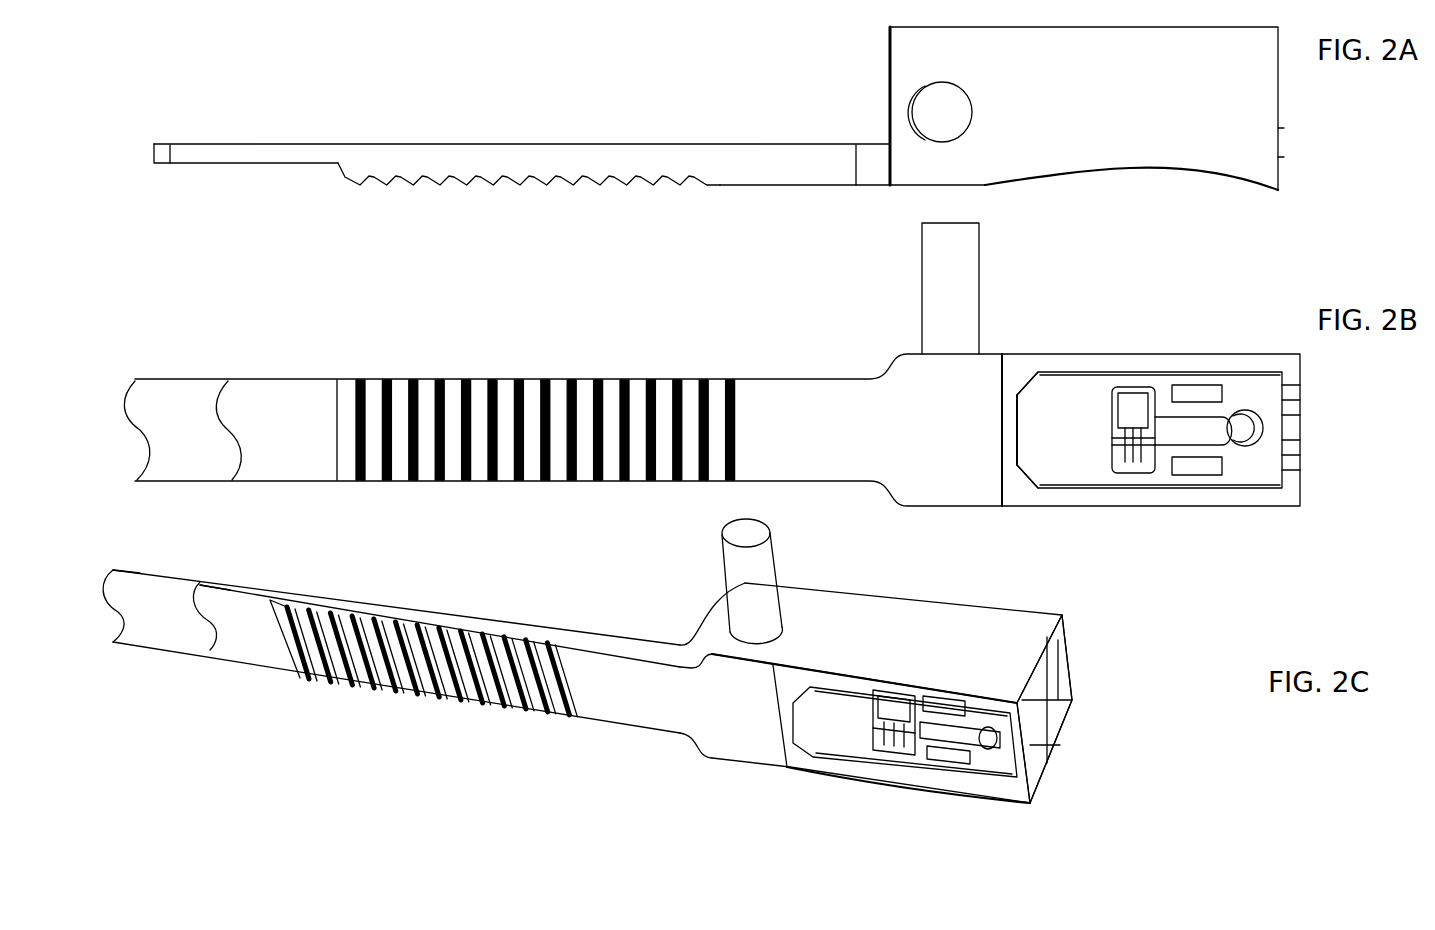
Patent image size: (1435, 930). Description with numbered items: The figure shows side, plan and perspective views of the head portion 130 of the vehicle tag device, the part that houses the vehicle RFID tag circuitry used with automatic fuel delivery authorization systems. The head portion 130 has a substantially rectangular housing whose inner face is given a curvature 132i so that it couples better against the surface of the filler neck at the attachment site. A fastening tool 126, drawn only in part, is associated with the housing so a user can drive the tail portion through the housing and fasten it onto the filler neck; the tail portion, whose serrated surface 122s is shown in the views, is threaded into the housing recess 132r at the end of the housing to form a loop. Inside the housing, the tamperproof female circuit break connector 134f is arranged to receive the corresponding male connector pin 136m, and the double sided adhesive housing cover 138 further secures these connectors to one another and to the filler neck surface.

In FIG. 2A, the head portion 130 is at (830, 85).
In FIG. 2B, the head portion 130 is at (890, 340).
In FIG. 2C, the head portion 130 is at (645, 594).
In FIG. 2A, the serrations 122s is at (477, 202).
In FIG. 2C, the serrations 122s is at (410, 707).
In FIG. 2A, the inner surface curvature of housing 132i is at (1207, 176).
In FIG. 2B, the fastening tool 126 is at (983, 315).
In FIG. 2C, the fastening tool 126 is at (773, 570).
In FIG. 2B, the female circuit break connector 134f is at (1123, 425).
In FIG. 2C, the female circuit break connector 134f is at (894, 722).
In FIG. 2B, the male circuit break connector pin 136m is at (1153, 478).
In FIG. 2C, the housing recess 132r is at (1053, 680).
In FIG. 2C, the double sided adhesive housing cover 138 is at (798, 757).